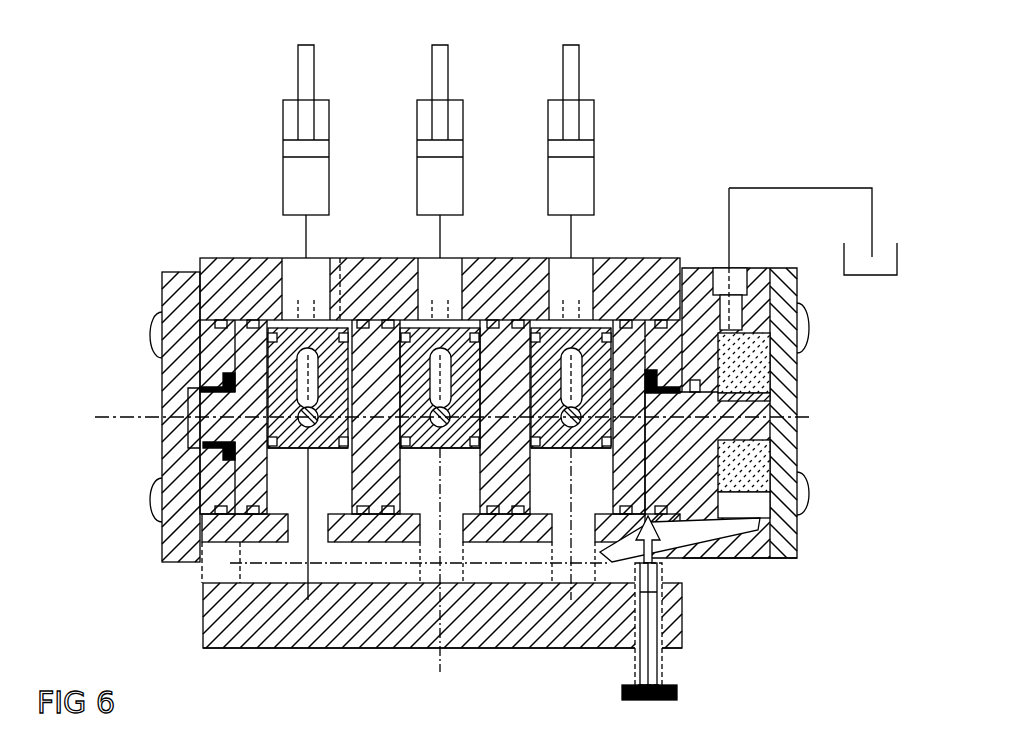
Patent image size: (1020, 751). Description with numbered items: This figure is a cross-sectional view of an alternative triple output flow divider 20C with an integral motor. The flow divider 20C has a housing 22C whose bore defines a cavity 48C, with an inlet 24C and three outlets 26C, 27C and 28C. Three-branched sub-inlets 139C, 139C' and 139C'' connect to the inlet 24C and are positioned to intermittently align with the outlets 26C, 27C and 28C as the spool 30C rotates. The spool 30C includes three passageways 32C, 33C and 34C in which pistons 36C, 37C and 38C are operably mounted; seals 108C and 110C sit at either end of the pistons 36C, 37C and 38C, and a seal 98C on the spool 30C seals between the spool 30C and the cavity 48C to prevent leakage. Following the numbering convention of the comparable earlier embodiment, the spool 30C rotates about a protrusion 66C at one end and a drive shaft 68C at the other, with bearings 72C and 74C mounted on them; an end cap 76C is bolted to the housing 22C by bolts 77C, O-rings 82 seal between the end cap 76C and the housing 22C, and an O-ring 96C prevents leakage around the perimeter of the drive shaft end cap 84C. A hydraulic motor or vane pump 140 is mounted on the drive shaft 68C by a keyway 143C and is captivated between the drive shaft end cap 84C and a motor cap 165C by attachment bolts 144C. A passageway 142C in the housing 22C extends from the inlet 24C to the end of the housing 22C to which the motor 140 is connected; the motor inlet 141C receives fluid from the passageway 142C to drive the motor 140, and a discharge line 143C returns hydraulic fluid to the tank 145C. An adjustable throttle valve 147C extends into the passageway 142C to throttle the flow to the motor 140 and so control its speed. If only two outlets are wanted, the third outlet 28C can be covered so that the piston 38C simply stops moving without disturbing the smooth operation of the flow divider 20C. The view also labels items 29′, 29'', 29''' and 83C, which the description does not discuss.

The flow divider 20C is at (180, 172).
The first actuator cylinder 29′ is at (283, 162).
The second actuator cylinder 29'' is at (411, 151).
The third actuator cylinder 29''' is at (543, 151).
The O-rings 82 is at (227, 258).
The outlet 26C is at (297, 268).
The outlet 27C is at (427, 268).
The outlet 28C is at (556, 268).
The seal 98C is at (365, 320).
The adjustable throttle valve 147C is at (676, 685).
The O-ring 96C is at (655, 372).
The drive shaft bearing 74C is at (707, 268).
The drive shaft end cap 84C is at (757, 268).
The discharge line 143C is at (805, 188).
The tank 145C is at (845, 276).
The end cap 76C is at (162, 282).
The bolts 77C is at (150, 335).
The seal 108C is at (235, 365).
The protrusion 66C is at (215, 408).
The seal 110C is at (195, 430).
The bearing 72C is at (215, 458).
The spool 30C is at (265, 490).
The cavity 48C is at (270, 503).
The intermediate plate 83C is at (200, 580).
The housing 22C is at (203, 648).
The inlet 24C is at (435, 645).
The piston 36C is at (292, 449).
The piston 37C is at (421, 449).
The piston 38C is at (551, 449).
The passageway 32C is at (311, 524).
The passageway 33C is at (444, 560).
The passageway 34C is at (574, 524).
The sub-inlet 139C is at (420, 549).
The sub-inlet 139C' is at (471, 560).
The sub-inlet 139C'' is at (558, 557).
The drive shaft 68C is at (762, 428).
The attachment bolts 144C is at (812, 495).
The motor inlet 141C is at (752, 508).
The motor cap 165C is at (797, 548).
The hydraulic motor or vane pump 140 is at (755, 562).
The passageway 142C is at (687, 533).